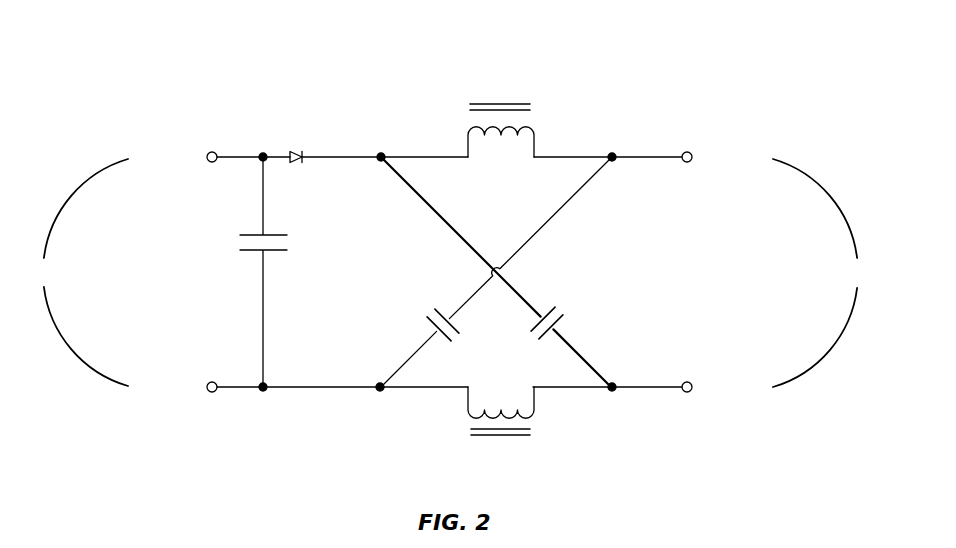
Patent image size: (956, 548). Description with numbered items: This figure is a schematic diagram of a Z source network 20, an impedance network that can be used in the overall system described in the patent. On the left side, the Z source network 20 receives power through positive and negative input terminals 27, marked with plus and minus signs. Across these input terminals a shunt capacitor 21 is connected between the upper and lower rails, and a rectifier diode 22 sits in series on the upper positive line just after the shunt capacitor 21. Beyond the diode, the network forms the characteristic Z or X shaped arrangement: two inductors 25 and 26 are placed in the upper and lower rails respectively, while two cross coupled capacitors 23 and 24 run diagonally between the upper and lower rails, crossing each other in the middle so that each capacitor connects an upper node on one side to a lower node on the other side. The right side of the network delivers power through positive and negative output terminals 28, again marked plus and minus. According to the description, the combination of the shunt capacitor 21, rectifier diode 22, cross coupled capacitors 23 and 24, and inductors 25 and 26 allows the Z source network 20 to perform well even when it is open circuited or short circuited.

The Z source network 20 is at (689, 60).
The shunt capacitor 21 is at (252, 252).
The rectifier diode 22 is at (301, 149).
The cross coupled capacitor 23 is at (433, 325).
The cross coupled capacitor 24 is at (558, 323).
The inductor 25 is at (503, 101).
The inductor 26 is at (503, 437).
The positive and negative input terminals 27 is at (95, 273).
The positive and negative output terminals 28 is at (804, 273).